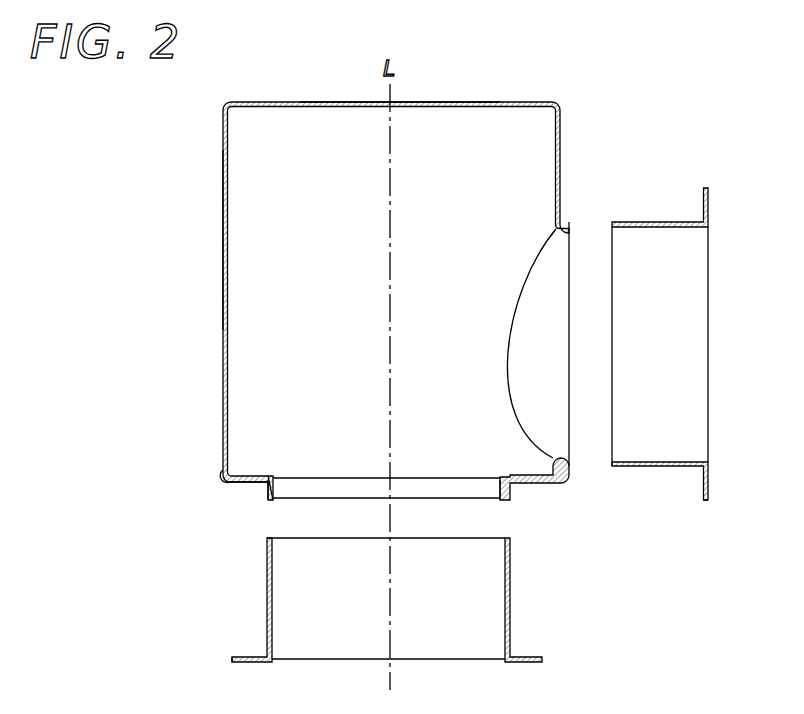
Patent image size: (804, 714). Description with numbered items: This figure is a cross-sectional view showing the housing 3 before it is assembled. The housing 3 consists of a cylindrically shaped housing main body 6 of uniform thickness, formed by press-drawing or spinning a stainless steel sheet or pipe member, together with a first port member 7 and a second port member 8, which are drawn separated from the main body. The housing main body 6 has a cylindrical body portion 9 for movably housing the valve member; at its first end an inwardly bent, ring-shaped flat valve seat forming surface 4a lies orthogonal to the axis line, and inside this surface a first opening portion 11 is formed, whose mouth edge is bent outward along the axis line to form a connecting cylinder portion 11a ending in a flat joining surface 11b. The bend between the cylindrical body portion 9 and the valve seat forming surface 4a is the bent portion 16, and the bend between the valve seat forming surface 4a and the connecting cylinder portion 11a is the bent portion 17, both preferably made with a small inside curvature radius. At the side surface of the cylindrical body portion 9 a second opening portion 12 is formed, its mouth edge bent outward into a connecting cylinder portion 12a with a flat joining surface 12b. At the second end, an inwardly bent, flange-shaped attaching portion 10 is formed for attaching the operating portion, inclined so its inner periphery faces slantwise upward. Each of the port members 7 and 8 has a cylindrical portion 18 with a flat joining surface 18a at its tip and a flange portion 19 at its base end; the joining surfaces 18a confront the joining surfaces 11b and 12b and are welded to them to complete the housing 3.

The housing 3 is at (193, 143).
The valve seat forming surface 4a is at (237, 475).
The housing main body 6 is at (222, 197).
The first port member 7 is at (516, 593).
The second port member 8 is at (722, 263).
The cylindrical body portion 9 is at (222, 262).
The attaching portion 10 is at (545, 101).
The first opening portion 11 is at (496, 490).
The connecting cylinder portion 11a is at (272, 490).
The joining surface 11b is at (268, 497).
The second opening portion 12 is at (575, 232).
The connecting cylinder portion 12a is at (563, 226).
The joining surface 12b is at (578, 468).
The bent portion 16 is at (222, 478).
The bent portion 17 is at (270, 478).
The cylindrical portion 18 is at (655, 466).
The joining surface 18a is at (609, 466).
The flange portion 19 is at (709, 487).